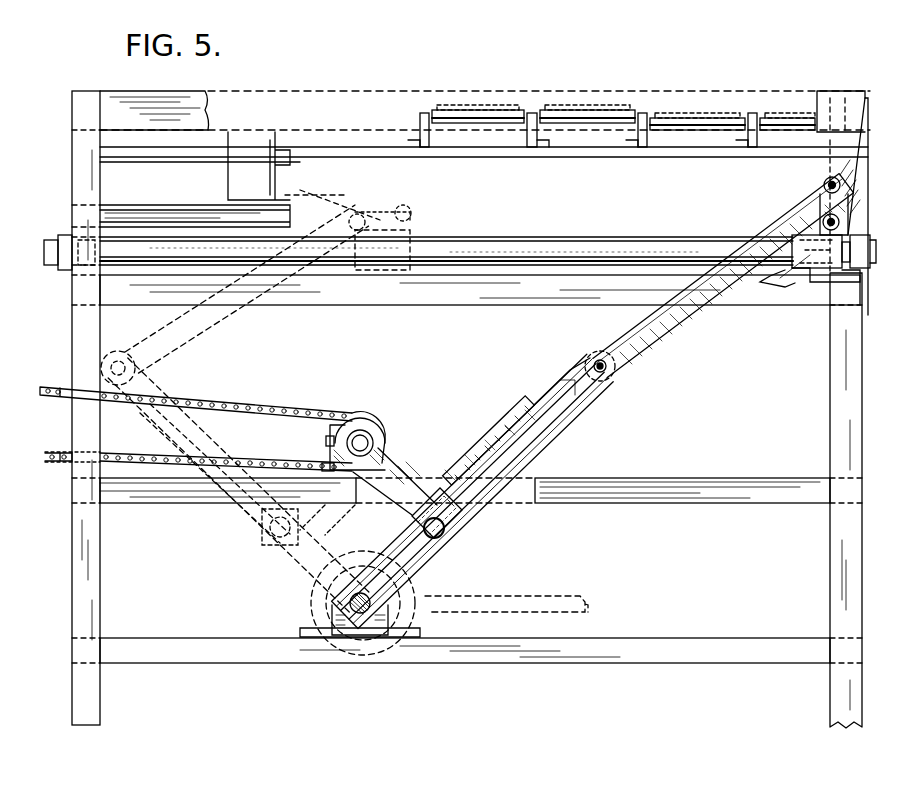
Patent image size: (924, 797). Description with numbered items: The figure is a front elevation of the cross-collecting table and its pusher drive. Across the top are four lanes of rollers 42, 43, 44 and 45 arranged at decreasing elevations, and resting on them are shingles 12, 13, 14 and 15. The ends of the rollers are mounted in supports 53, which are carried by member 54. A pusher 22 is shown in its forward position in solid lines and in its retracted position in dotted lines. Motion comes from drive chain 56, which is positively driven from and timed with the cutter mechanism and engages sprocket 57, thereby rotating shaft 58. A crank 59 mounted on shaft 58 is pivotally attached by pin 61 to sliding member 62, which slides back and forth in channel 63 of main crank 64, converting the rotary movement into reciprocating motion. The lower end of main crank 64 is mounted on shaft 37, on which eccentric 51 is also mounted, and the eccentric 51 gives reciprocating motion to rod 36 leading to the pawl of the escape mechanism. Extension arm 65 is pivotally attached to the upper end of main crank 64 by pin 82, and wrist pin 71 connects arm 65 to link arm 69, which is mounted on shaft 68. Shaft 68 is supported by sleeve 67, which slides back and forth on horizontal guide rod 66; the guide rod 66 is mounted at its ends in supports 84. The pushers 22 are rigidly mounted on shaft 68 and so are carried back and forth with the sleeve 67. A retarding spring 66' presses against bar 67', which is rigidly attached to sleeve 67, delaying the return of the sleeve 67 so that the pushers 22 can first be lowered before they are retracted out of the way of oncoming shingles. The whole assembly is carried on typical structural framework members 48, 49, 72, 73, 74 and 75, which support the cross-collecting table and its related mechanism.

The shingle 12 is at (447, 110).
The rollers 42 is at (493, 112).
The shingle 13 is at (569, 110).
The rollers 43 is at (609, 112).
The shingle 14 is at (671, 120).
The rollers 44 is at (712, 120).
The shingle 15 is at (775, 118).
The rollers 45 is at (797, 124).
The pusher 22 is at (870, 108).
The supports 53 is at (422, 117).
The member 54 is at (585, 160).
The structural framework member 49 is at (170, 122).
The supports 84 is at (68, 248).
The link arm 69 is at (384, 210).
The shaft 68 is at (406, 212).
The wrist pin 71 is at (349, 222).
The sleeve 67 is at (607, 282).
The bar 67' is at (761, 288).
The guide rod 66 is at (446, 270).
The retarding spring 66' is at (770, 295).
The structural framework member 75 is at (508, 290).
The extension arm 65 is at (214, 322).
The main crank 64 is at (568, 387).
The pin 82 is at (608, 370).
The drive chain 56 is at (303, 410).
The shaft 58 is at (366, 435).
The sprocket 57 is at (334, 445).
The crank 59 is at (392, 461).
The channel 63 is at (243, 514).
The sliding member 62 is at (263, 537).
The pin 61 is at (277, 548).
The structural framework member 48 is at (720, 500).
The structural framework member 73 is at (72, 562).
The structural framework member 72 is at (832, 590).
The rod 36 is at (570, 596).
The shaft 37 is at (340, 612).
The eccentric 51 is at (408, 652).
The structural framework member 74 is at (665, 660).